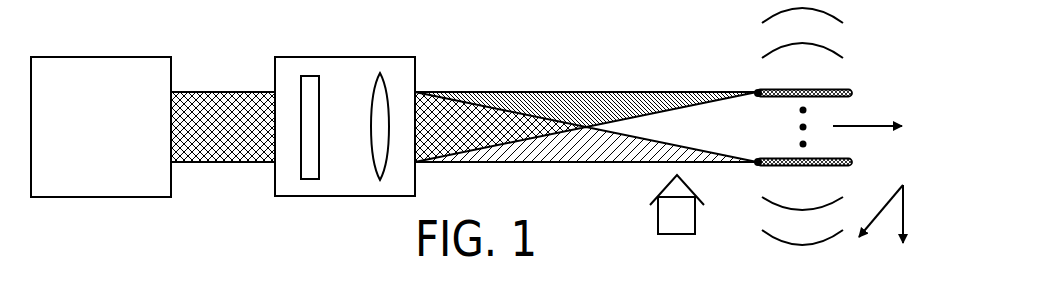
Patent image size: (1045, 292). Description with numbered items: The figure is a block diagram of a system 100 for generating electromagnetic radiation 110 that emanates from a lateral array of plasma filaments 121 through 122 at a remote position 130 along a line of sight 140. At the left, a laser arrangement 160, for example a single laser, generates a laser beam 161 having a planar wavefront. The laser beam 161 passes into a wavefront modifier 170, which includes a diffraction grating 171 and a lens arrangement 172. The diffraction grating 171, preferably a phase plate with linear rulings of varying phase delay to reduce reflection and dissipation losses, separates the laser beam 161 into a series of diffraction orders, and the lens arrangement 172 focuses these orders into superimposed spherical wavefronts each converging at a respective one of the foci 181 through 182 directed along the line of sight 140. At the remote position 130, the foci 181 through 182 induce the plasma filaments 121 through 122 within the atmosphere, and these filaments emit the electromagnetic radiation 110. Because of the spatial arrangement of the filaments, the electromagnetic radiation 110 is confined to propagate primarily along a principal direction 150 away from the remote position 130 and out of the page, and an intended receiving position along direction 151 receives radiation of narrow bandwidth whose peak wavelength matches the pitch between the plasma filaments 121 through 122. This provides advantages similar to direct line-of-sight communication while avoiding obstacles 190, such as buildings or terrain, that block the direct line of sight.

The system 100 is at (65, 53).
The electromagnetic radiation 110 is at (777, 52).
The plasma filament 121 is at (845, 89).
The plasma filament 122 is at (845, 158).
The remote position 130 is at (713, 66).
The line of sight 140 is at (877, 116).
The principal direction 150 is at (887, 204).
The direction 151 is at (885, 212).
The laser arrangement 160 is at (152, 57).
The laser beam 161 is at (232, 92).
The wavefront modifier 170 is at (290, 57).
The diffraction grating 171 is at (320, 110).
The lens arrangement 172 is at (373, 158).
The focus 181 is at (757, 90).
The focus 182 is at (757, 165).
The obstacle 190 is at (658, 220).